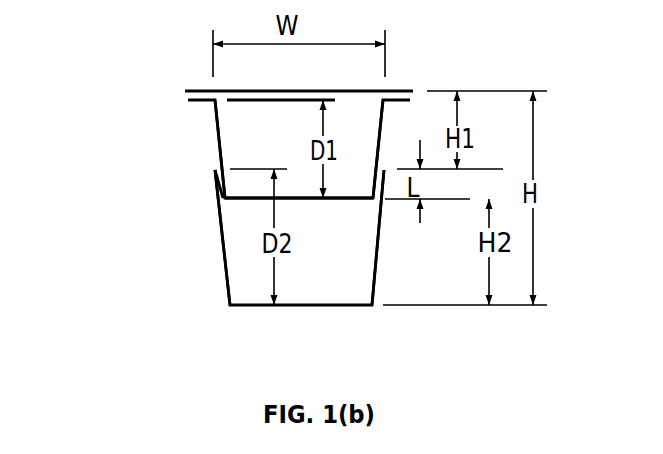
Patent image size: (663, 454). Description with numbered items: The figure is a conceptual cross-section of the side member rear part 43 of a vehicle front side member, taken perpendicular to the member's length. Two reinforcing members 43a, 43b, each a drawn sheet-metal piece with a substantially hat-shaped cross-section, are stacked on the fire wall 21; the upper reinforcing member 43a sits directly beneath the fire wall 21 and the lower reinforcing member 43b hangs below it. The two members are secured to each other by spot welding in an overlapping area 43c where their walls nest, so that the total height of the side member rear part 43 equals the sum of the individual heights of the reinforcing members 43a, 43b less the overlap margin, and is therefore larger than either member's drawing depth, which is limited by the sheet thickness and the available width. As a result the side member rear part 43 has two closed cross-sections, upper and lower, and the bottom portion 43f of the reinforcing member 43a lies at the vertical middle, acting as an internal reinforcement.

The fire wall 21 is at (388, 89).
The side member rear part 43 is at (185, 143).
The reinforcing member 43a is at (213, 122).
The reinforcing member 43b is at (222, 258).
The overlapping area 43c is at (222, 185).
The bottom portion 43f is at (343, 200).